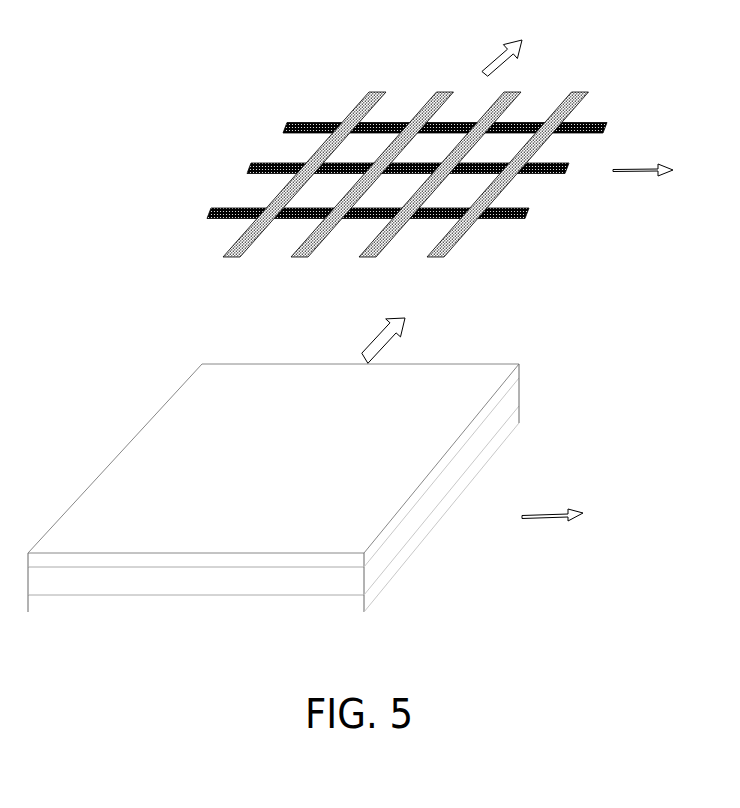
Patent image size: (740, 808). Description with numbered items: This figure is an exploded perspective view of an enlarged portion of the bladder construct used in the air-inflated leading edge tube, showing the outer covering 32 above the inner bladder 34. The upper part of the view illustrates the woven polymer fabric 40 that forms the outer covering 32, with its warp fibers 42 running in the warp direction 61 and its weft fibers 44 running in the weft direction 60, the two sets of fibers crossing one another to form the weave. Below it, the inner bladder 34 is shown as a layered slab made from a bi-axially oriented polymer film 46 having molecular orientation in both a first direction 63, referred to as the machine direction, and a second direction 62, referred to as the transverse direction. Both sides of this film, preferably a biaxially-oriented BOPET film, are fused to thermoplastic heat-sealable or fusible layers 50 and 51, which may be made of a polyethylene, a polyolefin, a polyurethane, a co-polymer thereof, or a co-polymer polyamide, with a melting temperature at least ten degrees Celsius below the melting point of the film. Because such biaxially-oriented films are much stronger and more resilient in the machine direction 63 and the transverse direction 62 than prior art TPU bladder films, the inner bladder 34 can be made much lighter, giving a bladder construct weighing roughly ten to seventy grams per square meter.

The outer covering 32 is at (451, 134).
The woven polymer fabric 40 is at (451, 139).
The warp fibers 42 is at (608, 135).
The weft fibers 44 is at (583, 90).
The weft direction 60 is at (510, 44).
The warp direction 61 is at (660, 172).
The inner bladder 34 is at (308, 505).
The heat-sealable layer 51 is at (520, 375).
The bi-axially oriented polymer film 46 is at (55, 578).
The heat-sealable layer 50 is at (332, 602).
The second direction (transverse direction) 62 is at (394, 328).
The first direction (machine direction) 63 is at (570, 517).